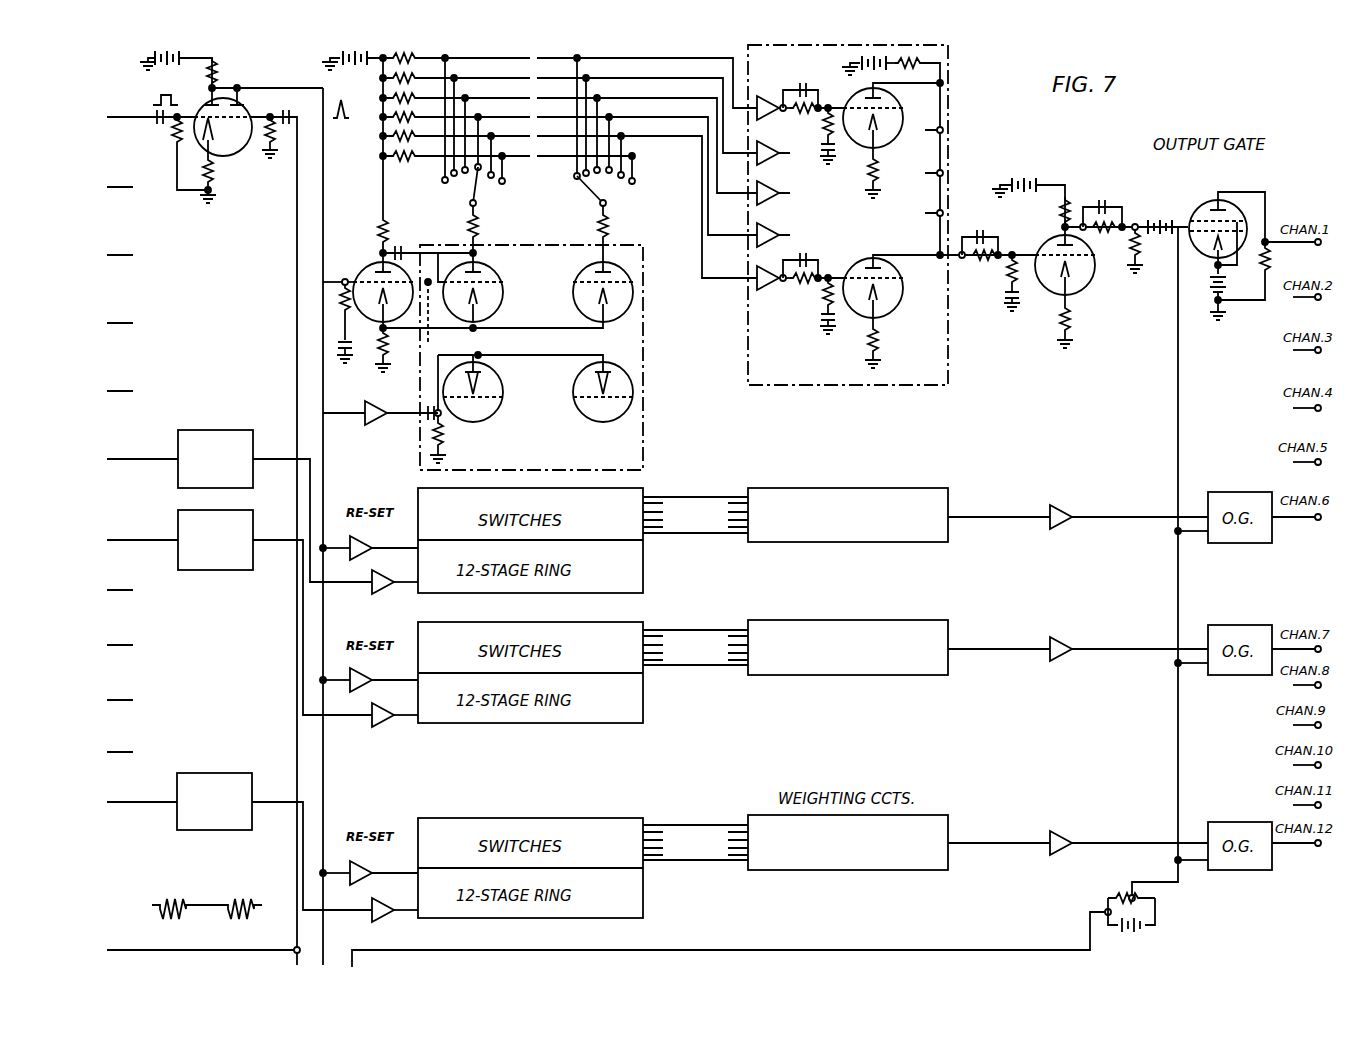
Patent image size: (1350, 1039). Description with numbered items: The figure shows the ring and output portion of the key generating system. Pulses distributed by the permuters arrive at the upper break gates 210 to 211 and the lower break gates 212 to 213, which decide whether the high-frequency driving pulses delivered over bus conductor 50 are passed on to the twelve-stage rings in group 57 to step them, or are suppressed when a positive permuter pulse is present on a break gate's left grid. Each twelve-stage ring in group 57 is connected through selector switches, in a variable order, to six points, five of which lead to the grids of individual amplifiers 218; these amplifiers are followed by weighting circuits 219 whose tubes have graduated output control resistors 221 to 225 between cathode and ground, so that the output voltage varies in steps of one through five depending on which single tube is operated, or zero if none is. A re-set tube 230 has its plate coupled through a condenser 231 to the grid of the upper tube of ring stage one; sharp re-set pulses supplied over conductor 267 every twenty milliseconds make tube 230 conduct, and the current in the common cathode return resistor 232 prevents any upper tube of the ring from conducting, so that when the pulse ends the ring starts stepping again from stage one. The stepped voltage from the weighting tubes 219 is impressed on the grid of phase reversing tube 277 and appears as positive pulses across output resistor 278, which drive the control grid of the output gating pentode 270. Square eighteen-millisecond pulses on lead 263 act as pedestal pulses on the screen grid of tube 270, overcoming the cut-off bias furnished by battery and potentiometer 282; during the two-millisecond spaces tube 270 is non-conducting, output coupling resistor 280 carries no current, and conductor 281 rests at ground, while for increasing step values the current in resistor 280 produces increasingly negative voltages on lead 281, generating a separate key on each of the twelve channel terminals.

The bus conductor 50 is at (145, 950).
The rings of 12 57 is at (505, 340).
The break gate tube 210 is at (232, 150).
The break gate 211 is at (216, 430).
The break gate 212 is at (208, 570).
The break gate 213 is at (208, 773).
The amplifier 218 is at (763, 100).
The weighting circuit 219 is at (893, 112).
The output control resistor 221 is at (878, 172).
The output control resistor 225 is at (878, 343).
The re-set tube 230 is at (372, 268).
The condenser 231 is at (392, 262).
The common cathode return resistor 232 is at (390, 348).
The conductor 263 is at (1180, 764).
The conductor 267 is at (326, 946).
The output gating pentode 270 is at (1209, 207).
The phase reversing tube 277 is at (1086, 287).
The output resistor 278 is at (1140, 262).
The output coupling resistor 280 is at (1264, 290).
The conductor 281 is at (1277, 240).
The battery and potentiometer 282 is at (1157, 913).